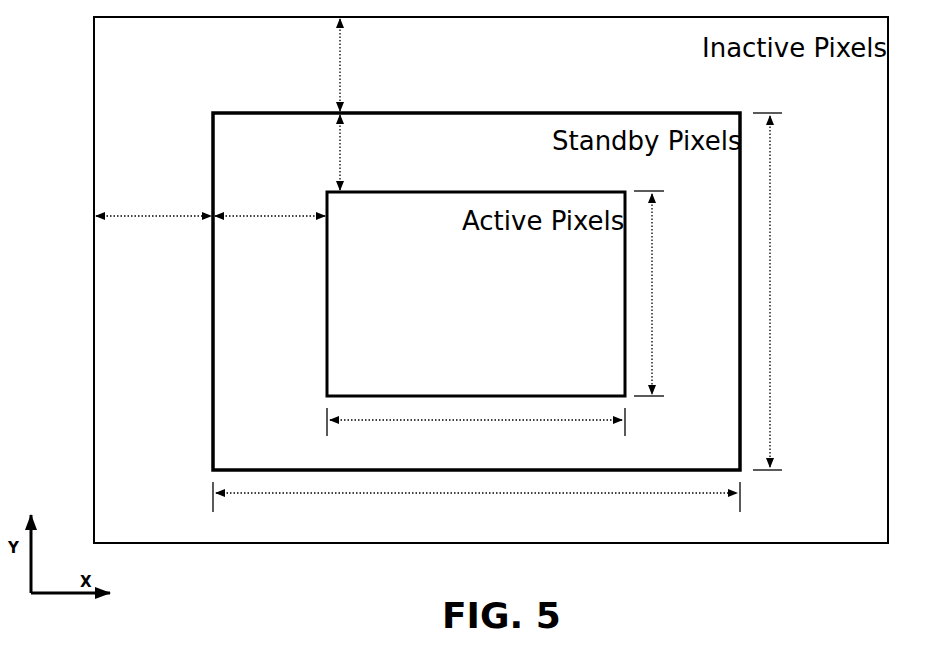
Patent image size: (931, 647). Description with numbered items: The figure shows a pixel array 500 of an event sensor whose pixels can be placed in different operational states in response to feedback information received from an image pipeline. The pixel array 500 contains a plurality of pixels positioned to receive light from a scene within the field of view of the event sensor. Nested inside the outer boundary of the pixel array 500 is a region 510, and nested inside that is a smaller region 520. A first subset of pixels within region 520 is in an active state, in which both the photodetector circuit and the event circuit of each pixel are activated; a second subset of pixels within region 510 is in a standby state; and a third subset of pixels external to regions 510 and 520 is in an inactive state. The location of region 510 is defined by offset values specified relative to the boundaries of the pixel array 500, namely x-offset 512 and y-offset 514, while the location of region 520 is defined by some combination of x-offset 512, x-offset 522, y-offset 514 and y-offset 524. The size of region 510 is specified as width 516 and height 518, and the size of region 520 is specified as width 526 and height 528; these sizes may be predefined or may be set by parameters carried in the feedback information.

The pixel array 500 is at (94, 283).
The region 510 is at (213, 343).
The region 520 is at (327, 283).
The x-offset 512 is at (178, 217).
The y-offset 514 is at (340, 52).
The width 516 is at (490, 497).
The height 518 is at (770, 330).
The x-offset 522 is at (301, 217).
The y-offset 524 is at (340, 148).
The width 526 is at (540, 428).
The height 528 is at (652, 315).